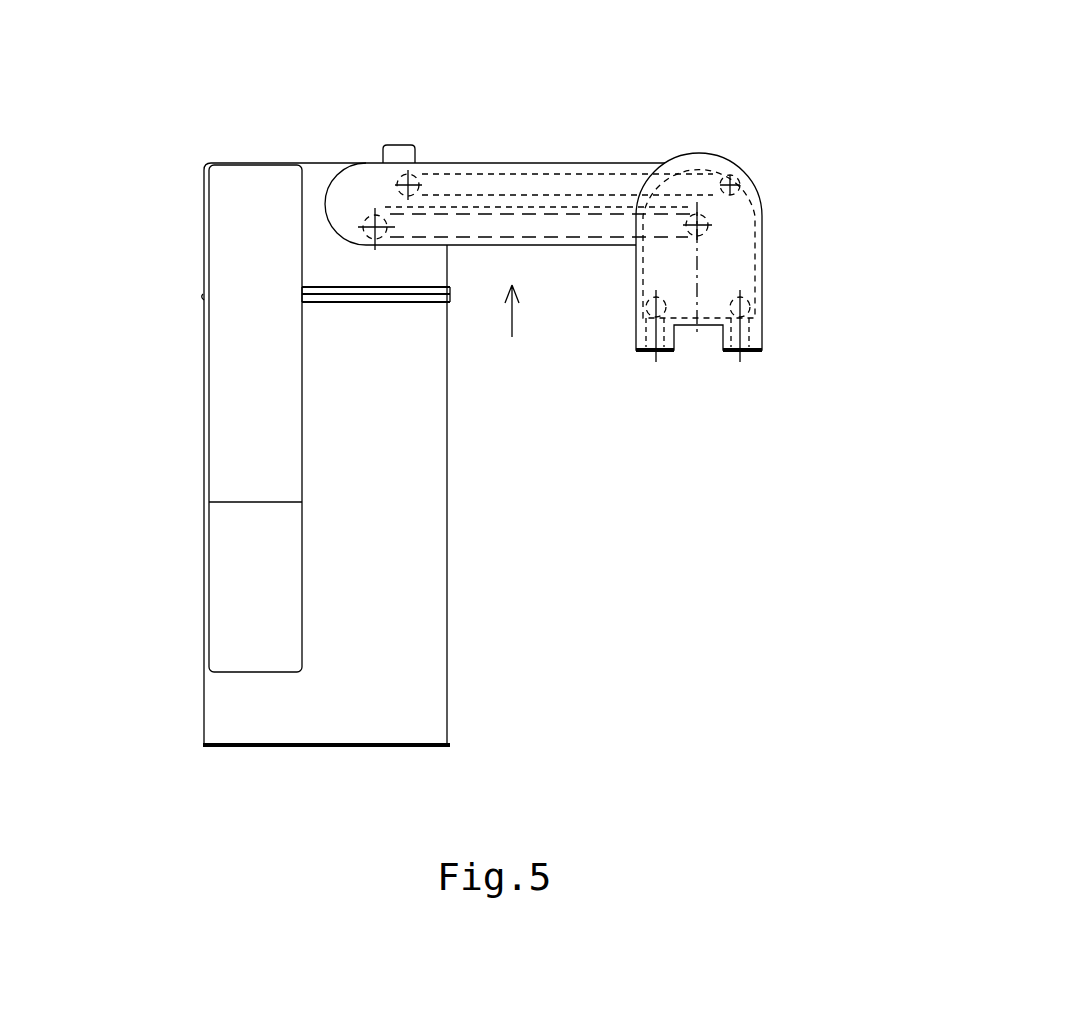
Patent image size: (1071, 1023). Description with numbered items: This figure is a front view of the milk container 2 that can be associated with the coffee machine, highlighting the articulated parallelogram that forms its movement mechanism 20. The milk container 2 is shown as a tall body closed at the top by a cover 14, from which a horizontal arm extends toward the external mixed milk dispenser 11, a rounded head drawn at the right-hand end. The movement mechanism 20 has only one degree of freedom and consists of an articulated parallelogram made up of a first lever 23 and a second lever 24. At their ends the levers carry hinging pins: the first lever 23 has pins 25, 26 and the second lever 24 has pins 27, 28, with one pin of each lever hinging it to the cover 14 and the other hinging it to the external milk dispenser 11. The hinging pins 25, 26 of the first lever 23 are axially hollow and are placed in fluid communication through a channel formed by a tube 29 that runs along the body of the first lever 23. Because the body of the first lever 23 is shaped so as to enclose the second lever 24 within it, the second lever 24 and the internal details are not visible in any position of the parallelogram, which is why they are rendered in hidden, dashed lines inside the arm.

The milk container 2 is at (247, 703).
The cover 14 is at (320, 250).
The tube 29 is at (538, 227).
The second lever 24 is at (540, 173).
The first lever 23 is at (597, 208).
The pin 25 is at (375, 227).
The pin 27 is at (408, 185).
The external mixed milk dispenser 11 is at (752, 256).
The pin 26 is at (698, 224).
The pin 28 is at (740, 178).
The movement mechanism 20 is at (513, 338).